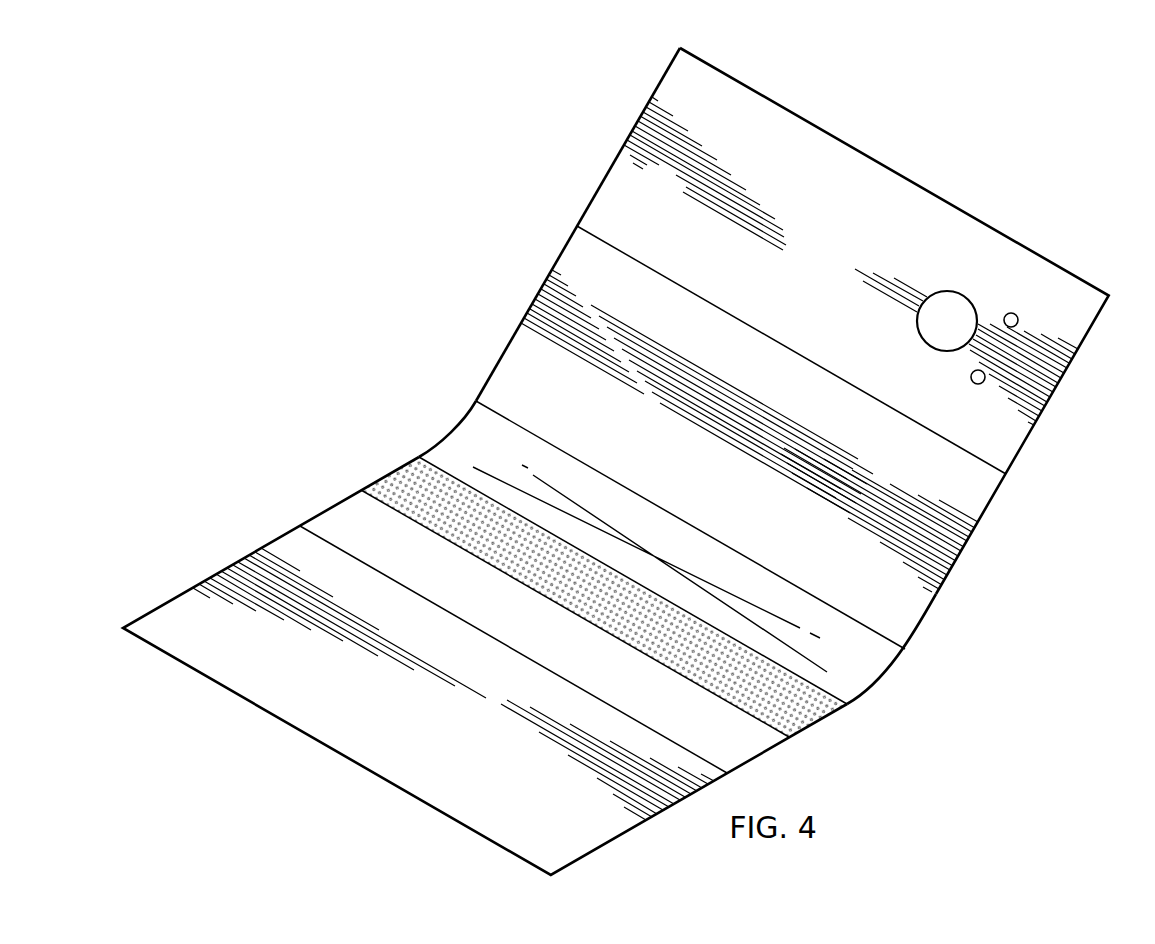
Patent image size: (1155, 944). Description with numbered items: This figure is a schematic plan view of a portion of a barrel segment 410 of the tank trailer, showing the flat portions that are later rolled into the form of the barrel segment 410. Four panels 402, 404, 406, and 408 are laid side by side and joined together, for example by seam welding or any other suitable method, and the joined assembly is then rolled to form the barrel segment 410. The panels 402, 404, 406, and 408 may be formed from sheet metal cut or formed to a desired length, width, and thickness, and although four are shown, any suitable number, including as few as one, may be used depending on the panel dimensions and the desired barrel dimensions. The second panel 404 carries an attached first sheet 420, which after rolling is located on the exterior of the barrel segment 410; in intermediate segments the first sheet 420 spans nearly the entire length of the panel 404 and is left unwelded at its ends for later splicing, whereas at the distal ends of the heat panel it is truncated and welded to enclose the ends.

The panel 402 is at (350, 750).
The second panel 404 is at (337, 513).
The panel 406 is at (575, 256).
The panel 408 is at (892, 179).
The barrel segment 410 is at (822, 128).
The first sheet 420 is at (808, 714).